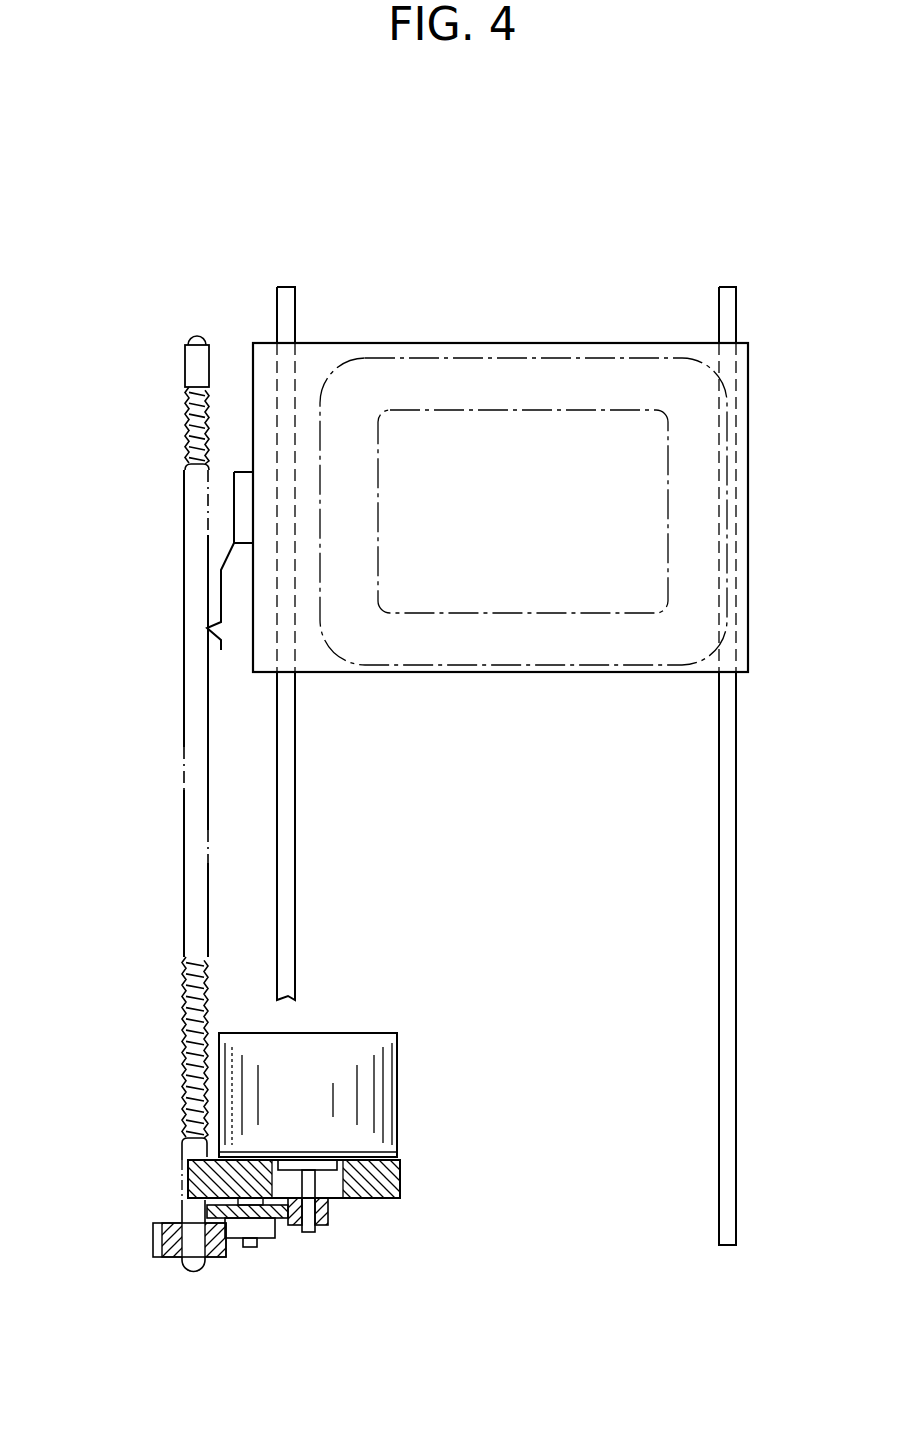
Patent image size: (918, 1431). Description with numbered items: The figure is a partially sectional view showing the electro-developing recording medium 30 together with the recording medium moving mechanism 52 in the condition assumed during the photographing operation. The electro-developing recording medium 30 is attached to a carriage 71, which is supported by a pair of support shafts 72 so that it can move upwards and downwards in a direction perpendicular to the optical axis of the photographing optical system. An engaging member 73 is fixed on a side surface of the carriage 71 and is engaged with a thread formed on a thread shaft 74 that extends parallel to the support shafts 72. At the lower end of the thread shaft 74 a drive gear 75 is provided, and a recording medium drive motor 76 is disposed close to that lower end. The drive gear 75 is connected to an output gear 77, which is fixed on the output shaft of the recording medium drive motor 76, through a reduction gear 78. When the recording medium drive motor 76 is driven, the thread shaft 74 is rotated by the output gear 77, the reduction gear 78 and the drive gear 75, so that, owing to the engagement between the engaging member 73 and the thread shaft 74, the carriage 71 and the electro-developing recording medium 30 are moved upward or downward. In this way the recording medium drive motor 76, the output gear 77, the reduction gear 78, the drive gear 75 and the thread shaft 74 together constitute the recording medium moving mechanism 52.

The electro-developing recording medium 30 is at (495, 410).
The recording medium moving mechanism 52 is at (151, 1195).
The carriage 71 is at (614, 343).
The support shafts 72 is at (722, 757).
The engaging member 73 is at (222, 588).
The thread shaft 74 is at (192, 796).
The drive gear 75 is at (168, 1257).
The recording medium drive motor 76 is at (355, 1033).
The output gear 77 is at (322, 1225).
The reduction gear 78 is at (260, 1227).